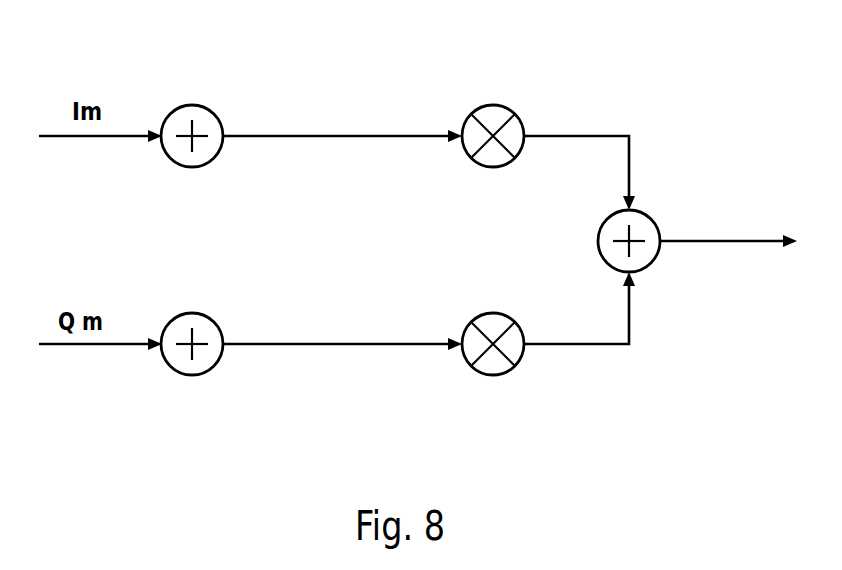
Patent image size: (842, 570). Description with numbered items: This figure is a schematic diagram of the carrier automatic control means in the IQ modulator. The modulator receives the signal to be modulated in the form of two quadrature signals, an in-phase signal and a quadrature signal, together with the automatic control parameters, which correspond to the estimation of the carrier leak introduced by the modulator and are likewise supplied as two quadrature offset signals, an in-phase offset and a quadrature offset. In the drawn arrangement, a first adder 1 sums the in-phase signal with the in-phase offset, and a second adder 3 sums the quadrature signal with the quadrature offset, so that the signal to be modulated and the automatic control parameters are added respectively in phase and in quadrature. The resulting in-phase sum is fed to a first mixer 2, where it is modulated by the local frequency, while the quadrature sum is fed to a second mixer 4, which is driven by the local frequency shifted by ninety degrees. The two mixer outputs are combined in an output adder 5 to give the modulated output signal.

The in-phase offset adder (Im + offset_im) 1 is at (192, 93).
The in-phase mixer (LO) 2 is at (493, 179).
The quadrature offset adder (Qm + offset_qm) 3 is at (192, 387).
The quadrature mixer (LO + 90°) 4 is at (493, 387).
The output summing adder 5 is at (629, 241).